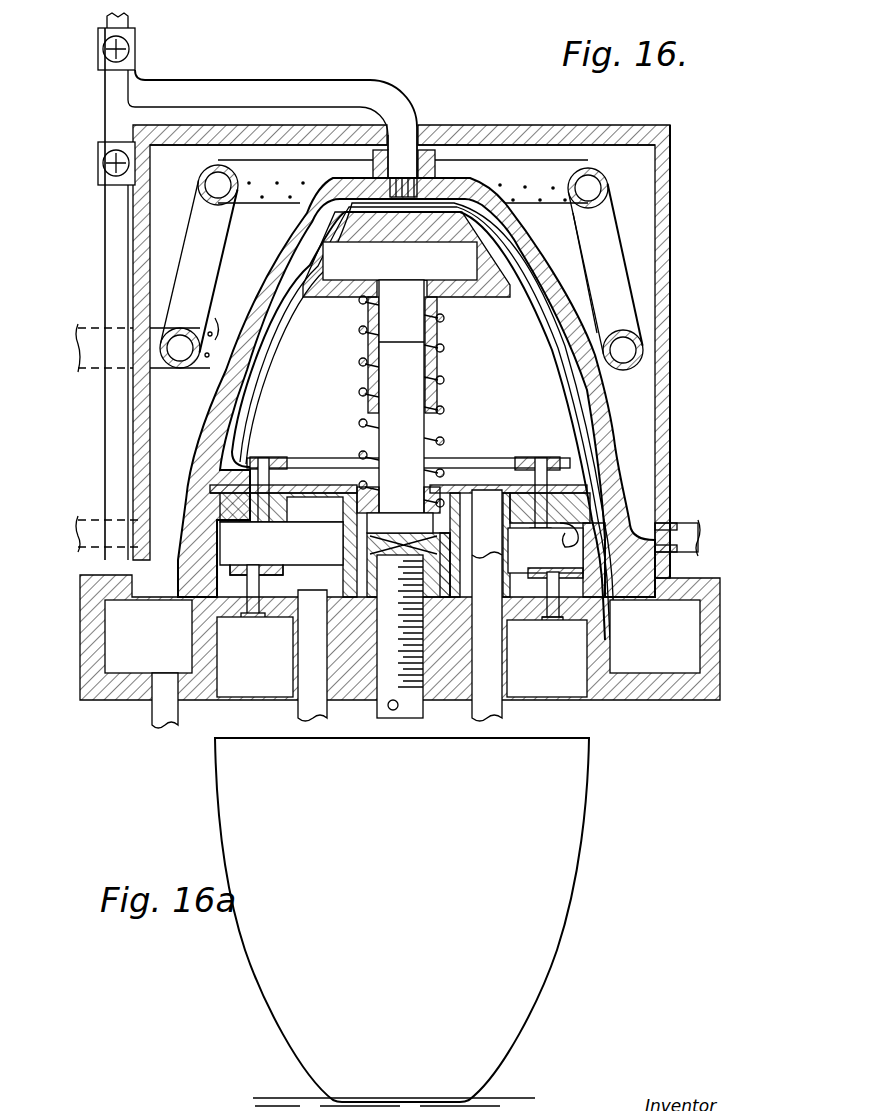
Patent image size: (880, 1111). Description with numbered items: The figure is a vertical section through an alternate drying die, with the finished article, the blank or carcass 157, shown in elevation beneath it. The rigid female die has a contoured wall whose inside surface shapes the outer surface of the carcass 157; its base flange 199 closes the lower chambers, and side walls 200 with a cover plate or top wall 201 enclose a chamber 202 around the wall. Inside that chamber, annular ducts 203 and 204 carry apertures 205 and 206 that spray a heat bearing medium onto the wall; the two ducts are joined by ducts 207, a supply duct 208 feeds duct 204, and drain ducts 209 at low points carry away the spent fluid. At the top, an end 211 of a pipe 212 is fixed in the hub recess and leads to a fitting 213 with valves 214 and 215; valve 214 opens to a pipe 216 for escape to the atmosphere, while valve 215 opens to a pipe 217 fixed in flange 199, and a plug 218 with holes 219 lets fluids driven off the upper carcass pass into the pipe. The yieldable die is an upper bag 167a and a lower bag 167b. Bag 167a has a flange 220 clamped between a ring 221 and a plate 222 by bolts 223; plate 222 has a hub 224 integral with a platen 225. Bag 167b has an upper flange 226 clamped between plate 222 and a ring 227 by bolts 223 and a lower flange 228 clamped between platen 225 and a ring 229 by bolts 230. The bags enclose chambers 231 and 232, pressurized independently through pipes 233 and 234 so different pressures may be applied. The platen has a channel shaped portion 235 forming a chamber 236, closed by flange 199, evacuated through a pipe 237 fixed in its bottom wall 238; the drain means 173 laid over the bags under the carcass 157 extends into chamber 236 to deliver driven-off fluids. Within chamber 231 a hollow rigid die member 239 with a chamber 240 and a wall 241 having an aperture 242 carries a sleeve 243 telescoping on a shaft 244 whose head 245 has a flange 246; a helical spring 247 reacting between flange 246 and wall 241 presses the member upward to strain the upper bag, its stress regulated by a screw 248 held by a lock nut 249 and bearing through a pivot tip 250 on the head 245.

In FIG. 16, the blank or carcass 157 is at (566, 375).
In FIG. 16A, the blank or carcass 157 is at (399, 940).
In FIG. 16, the upper yieldable die part or bag 167a is at (300, 374).
In FIG. 16, the lower yieldable die part or bag 167b is at (213, 551).
In FIG. 16, the drain means 173 is at (553, 408).
In FIG. 16, the base flange 199 is at (720, 591).
In FIG. 16, the side walls 200 is at (668, 252).
In FIG. 16, the cover plate or top wall 201 is at (612, 140).
In FIG. 16, the chamber 202 is at (640, 178).
In FIG. 16, the annular duct 203 is at (545, 181).
In FIG. 16, the annular duct 204 is at (180, 362).
In FIG. 16, the apertures 205 is at (277, 181).
In FIG. 16, the apertures 206 is at (214, 332).
In FIG. 16, the ducts 207 is at (205, 228).
In FIG. 16, the supply duct 208 is at (80, 362).
In FIG. 16, the outlet or drain ducts 209 is at (88, 520).
In FIG. 16, the end of duct or pipe 211 is at (420, 185).
In FIG. 16, the duct or pipe 212 is at (272, 95).
In FIG. 16, the fitting 213 is at (105, 113).
In FIG. 16, the valve 214 is at (98, 56).
In FIG. 16, the valve 215 is at (98, 167).
In FIG. 16, the duct or pipe 216 is at (107, 26).
In FIG. 16, the pipe or duct 217 is at (105, 294).
In FIG. 16, the plug 218 is at (373, 168).
In FIG. 16, the holes or apertures 219 is at (440, 178).
In FIG. 16, the flange 220 is at (272, 480).
In FIG. 16, the ring 221 is at (530, 457).
In FIG. 16, the plate 222 is at (598, 472).
In FIG. 16, the bolts 223 is at (527, 481).
In FIG. 16, the hub 224 is at (398, 500).
In FIG. 16, the platen 225 is at (542, 657).
In FIG. 16, the upper flange 226 is at (572, 492).
In FIG. 16, the ring 227 is at (545, 575).
In FIG. 16, the lower flange 228 is at (568, 607).
In FIG. 16, the ring 229 is at (557, 565).
In FIG. 16, the bolts 230 is at (561, 632).
In FIG. 16, the chamber 231 is at (453, 388).
In FIG. 16, the chamber 232 is at (577, 530).
In FIG. 16, the pipe or duct 233 is at (503, 714).
In FIG. 16, the pipe or duct 234 is at (298, 714).
In FIG. 16, the channel shaped portion 235 is at (718, 692).
In FIG. 16, the chamber 236 is at (628, 645).
In FIG. 16, the pipe or duct 237 is at (150, 739).
In FIG. 16, the bottom wall 238 is at (115, 698).
In FIG. 16, the hollow rigid die member 239 is at (478, 219).
In FIG. 16, the chamber 240 is at (365, 256).
In FIG. 16, the wall 241 is at (406, 254).
In FIG. 16, the aperture 242 is at (338, 304).
In FIG. 16, the sleeve 243 is at (440, 343).
In FIG. 16, the stem or shaft 244 is at (398, 448).
In FIG. 16, the head 245 is at (372, 517).
In FIG. 16, the flange 246 is at (356, 549).
In FIG. 16, the helical spring 247 is at (443, 323).
In FIG. 16, the screw 248 is at (420, 713).
In FIG. 16, the lock nut 249 is at (430, 638).
In FIG. 16, the pivot tip 250 is at (315, 509).